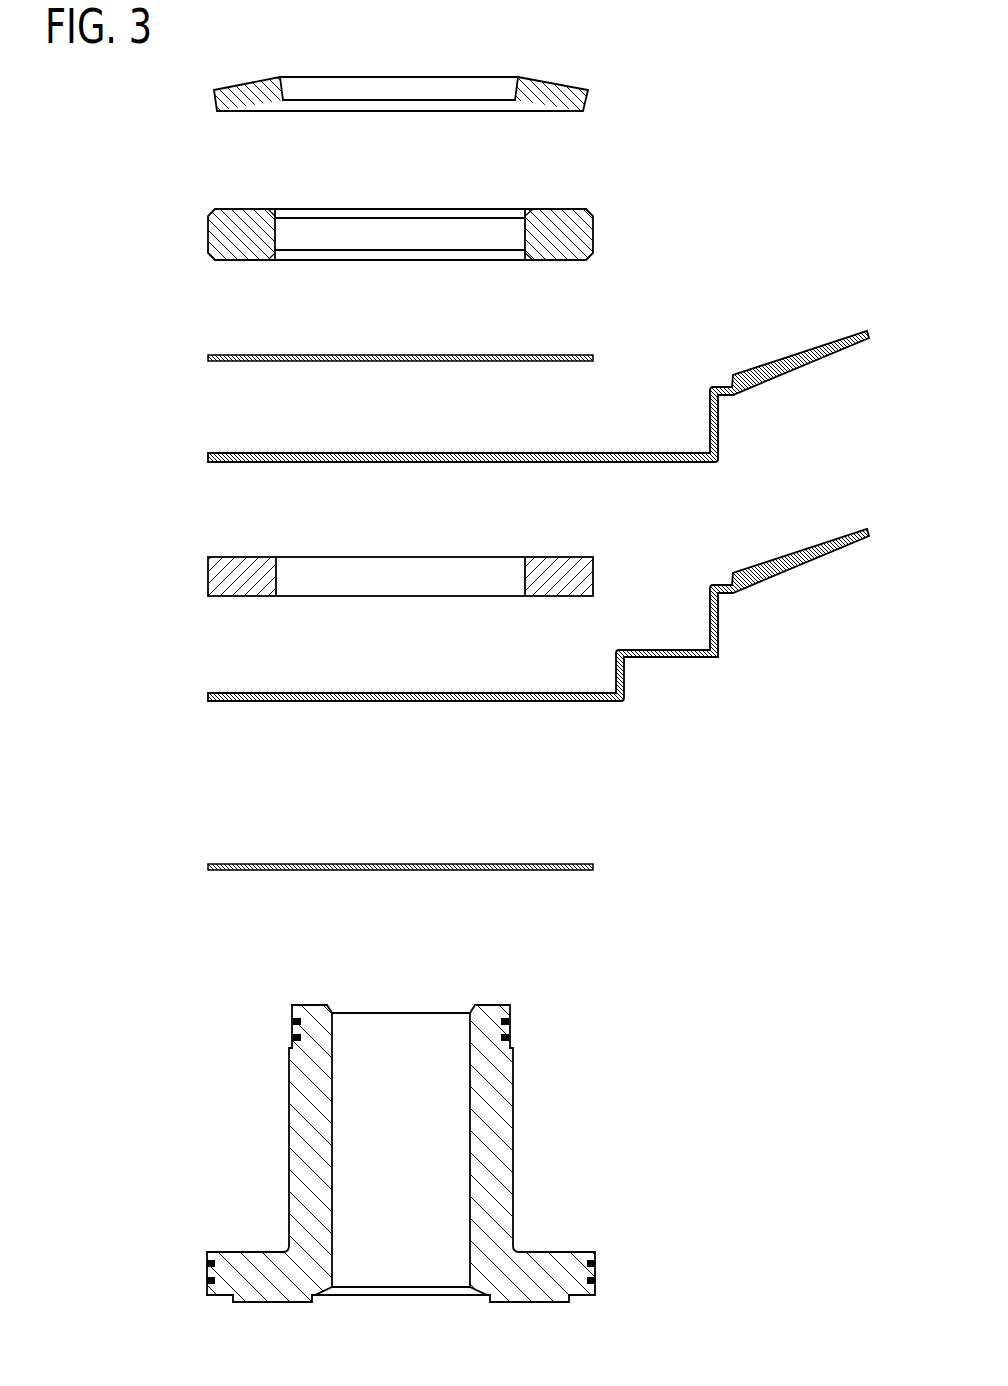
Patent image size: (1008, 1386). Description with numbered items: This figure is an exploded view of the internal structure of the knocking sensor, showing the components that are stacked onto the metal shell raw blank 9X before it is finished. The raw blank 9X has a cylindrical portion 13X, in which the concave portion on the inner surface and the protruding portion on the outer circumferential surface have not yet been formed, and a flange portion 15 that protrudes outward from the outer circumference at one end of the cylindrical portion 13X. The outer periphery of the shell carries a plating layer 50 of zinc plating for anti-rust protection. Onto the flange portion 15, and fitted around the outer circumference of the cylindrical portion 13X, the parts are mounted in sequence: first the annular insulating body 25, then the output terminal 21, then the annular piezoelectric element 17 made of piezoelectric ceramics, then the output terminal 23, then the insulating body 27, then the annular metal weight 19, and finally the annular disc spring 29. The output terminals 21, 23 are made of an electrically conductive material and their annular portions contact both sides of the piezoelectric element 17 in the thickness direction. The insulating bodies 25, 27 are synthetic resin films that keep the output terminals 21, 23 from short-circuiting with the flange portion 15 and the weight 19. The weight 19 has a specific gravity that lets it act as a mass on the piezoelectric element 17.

The metal shell raw blank 9X is at (651, 1030).
The cylindrical portion 13X is at (512, 1058).
The flange portion 15 is at (530, 1270).
The piezoelectric element 17 is at (560, 556).
The weight 19 is at (595, 234).
The output terminal 21 is at (557, 692).
The output terminal 23 is at (636, 452).
The insulating body 25 is at (558, 863).
The insulating body 27 is at (560, 354).
The disc spring 29 is at (565, 89).
The plating layer 50 is at (296, 1020).